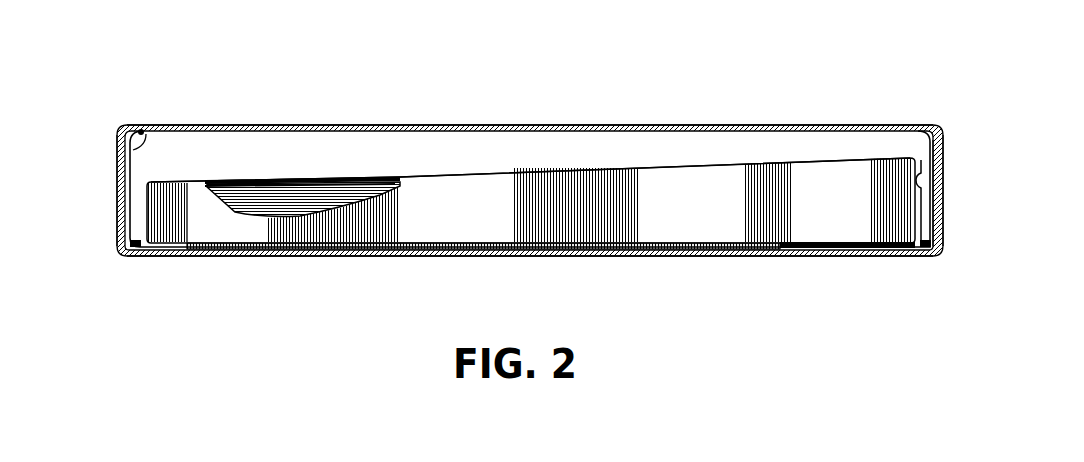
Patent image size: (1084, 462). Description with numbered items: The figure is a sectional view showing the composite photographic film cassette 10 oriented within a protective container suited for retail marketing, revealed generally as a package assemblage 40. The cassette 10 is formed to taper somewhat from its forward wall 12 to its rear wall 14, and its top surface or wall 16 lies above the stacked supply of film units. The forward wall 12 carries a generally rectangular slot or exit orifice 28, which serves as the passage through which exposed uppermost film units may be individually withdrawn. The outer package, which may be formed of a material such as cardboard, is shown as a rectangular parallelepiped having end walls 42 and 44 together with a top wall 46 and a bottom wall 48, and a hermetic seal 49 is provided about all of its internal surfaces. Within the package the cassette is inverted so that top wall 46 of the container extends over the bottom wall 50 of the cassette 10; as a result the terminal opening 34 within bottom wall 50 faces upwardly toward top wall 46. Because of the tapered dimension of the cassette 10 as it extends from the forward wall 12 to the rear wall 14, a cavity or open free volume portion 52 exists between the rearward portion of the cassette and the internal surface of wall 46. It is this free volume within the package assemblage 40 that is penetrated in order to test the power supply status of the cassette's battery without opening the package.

The composite photographic film cassette 10 is at (425, 233).
The forward wall 12 is at (929, 191).
The rear wall 14 is at (147, 213).
The top surface or wall 16 is at (638, 254).
The exit orifice 28 is at (935, 211).
The terminal opening 34 is at (295, 183).
The package assemblage 40 is at (748, 256).
The end wall 42 is at (943, 142).
The end wall 44 is at (117, 170).
The top wall 46 is at (572, 125).
The bottom wall 48 is at (560, 237).
The hermetic seal 49 is at (145, 131).
The bottom wall of cassette 50 is at (447, 175).
The free volume portion 52 is at (213, 158).